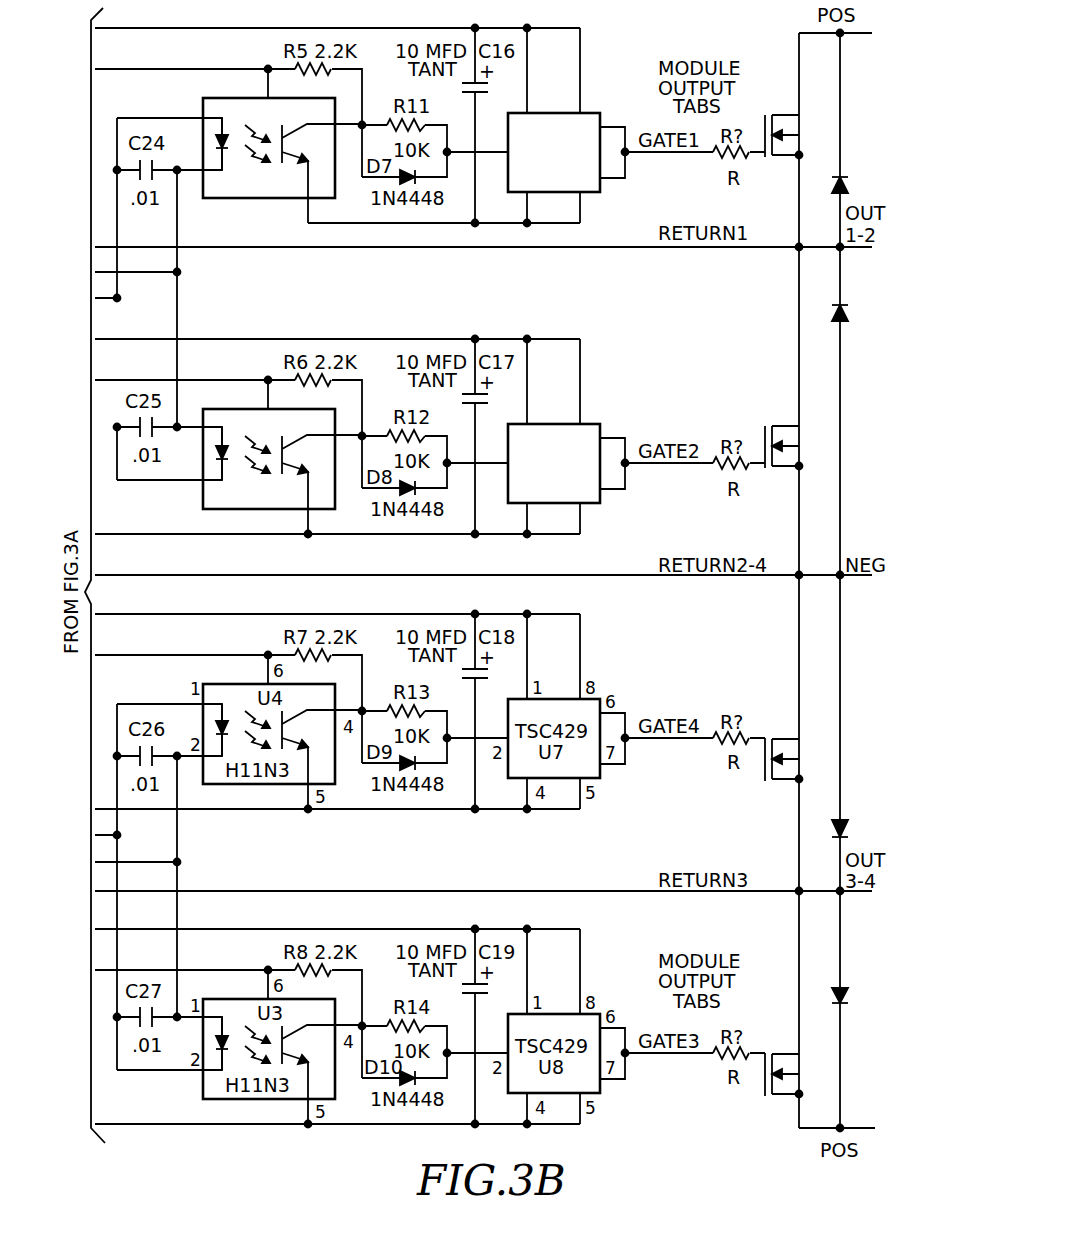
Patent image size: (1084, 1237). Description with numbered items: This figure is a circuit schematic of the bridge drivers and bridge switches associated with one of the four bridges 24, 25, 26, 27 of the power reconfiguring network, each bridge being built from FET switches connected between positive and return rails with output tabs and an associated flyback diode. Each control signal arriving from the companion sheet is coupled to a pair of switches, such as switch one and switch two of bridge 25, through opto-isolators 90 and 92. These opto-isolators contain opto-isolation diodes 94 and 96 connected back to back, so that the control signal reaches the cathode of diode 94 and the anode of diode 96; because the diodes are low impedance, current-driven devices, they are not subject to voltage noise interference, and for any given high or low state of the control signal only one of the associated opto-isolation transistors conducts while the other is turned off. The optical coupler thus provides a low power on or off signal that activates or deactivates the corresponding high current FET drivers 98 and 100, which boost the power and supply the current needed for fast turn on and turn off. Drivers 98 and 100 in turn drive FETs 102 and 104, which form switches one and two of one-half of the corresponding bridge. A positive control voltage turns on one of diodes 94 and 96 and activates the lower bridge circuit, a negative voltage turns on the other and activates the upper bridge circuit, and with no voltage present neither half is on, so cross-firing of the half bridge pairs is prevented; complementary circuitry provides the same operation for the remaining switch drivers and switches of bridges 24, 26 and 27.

The opto-isolator 90 is at (275, 140).
The opto-isolation diode 94 is at (234, 128).
The high current FET driver 98 is at (557, 200).
The FET 102 is at (783, 160).
The opto-isolator 92 is at (276, 455).
The opto-isolation diode 96 is at (237, 440).
The high current FET driver 100 is at (553, 512).
The FET 104 is at (780, 787).
The bridge 24 is at (808, 166).
The bridge 25 is at (825, 387).
The bridge 26 is at (805, 791).
The bridge 27 is at (878, 1090).